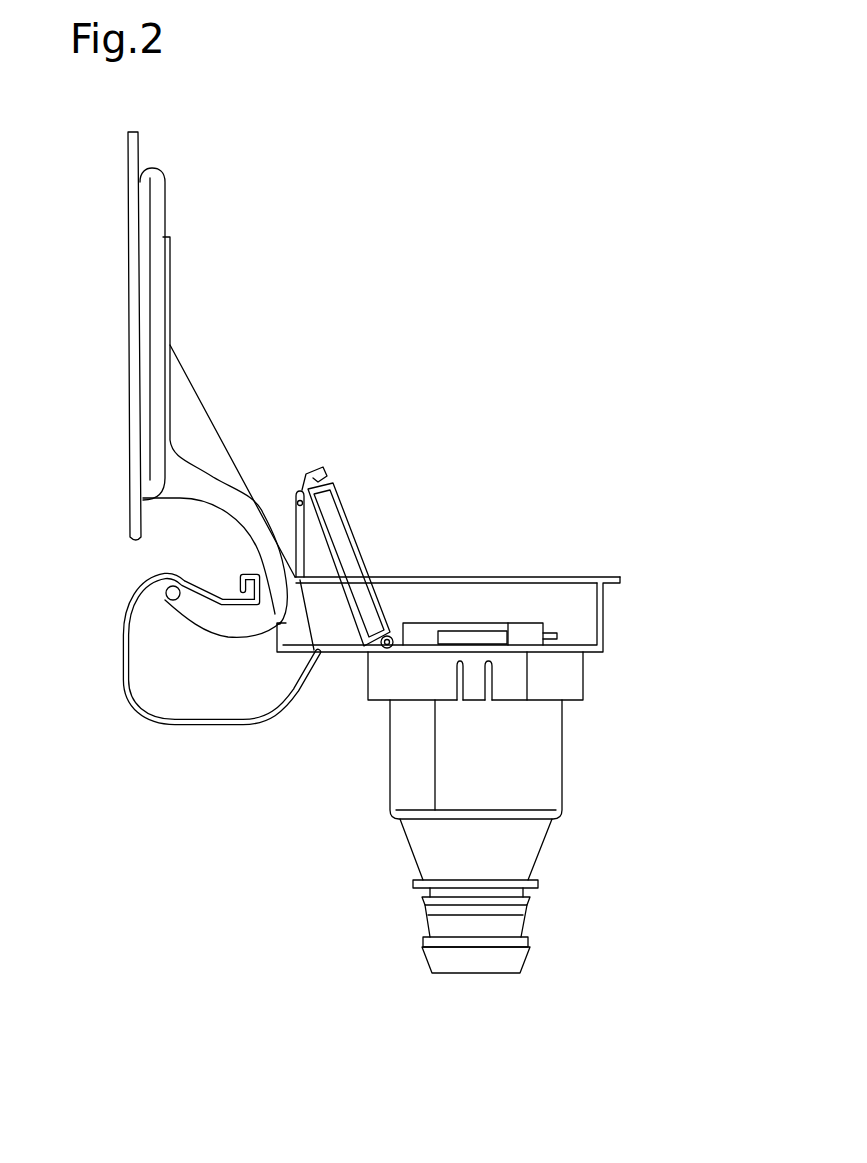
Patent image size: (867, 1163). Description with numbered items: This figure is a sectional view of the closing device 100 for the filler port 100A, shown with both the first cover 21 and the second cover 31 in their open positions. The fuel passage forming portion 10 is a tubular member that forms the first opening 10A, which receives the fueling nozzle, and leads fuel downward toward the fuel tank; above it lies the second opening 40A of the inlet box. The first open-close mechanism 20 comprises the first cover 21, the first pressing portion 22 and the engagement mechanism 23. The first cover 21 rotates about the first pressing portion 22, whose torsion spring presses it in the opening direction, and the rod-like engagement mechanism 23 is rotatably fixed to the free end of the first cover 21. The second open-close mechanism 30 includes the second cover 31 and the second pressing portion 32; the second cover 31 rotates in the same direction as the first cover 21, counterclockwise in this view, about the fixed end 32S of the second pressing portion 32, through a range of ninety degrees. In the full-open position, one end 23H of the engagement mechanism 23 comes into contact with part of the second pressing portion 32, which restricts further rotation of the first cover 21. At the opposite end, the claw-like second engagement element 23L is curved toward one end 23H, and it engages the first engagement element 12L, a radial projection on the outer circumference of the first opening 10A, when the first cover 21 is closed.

The closing device 100 is at (583, 260).
The second open-close mechanism 30 is at (350, 323).
The second cover 31 is at (171, 340).
The second pressing portion 32 is at (235, 452).
The fixed end 32S is at (162, 578).
The first open-close mechanism 20 is at (487, 403).
The first cover 21 is at (350, 540).
The first pressing portion 22 is at (393, 633).
The engagement mechanism 23 is at (294, 512).
The second engagement element 23L is at (326, 473).
The one end 23H is at (314, 650).
The filler port 100A is at (462, 588).
The first opening 10A is at (483, 647).
The second opening 40A is at (600, 577).
The first engagement element 12L is at (560, 637).
The fuel passage forming portion 10 is at (561, 733).